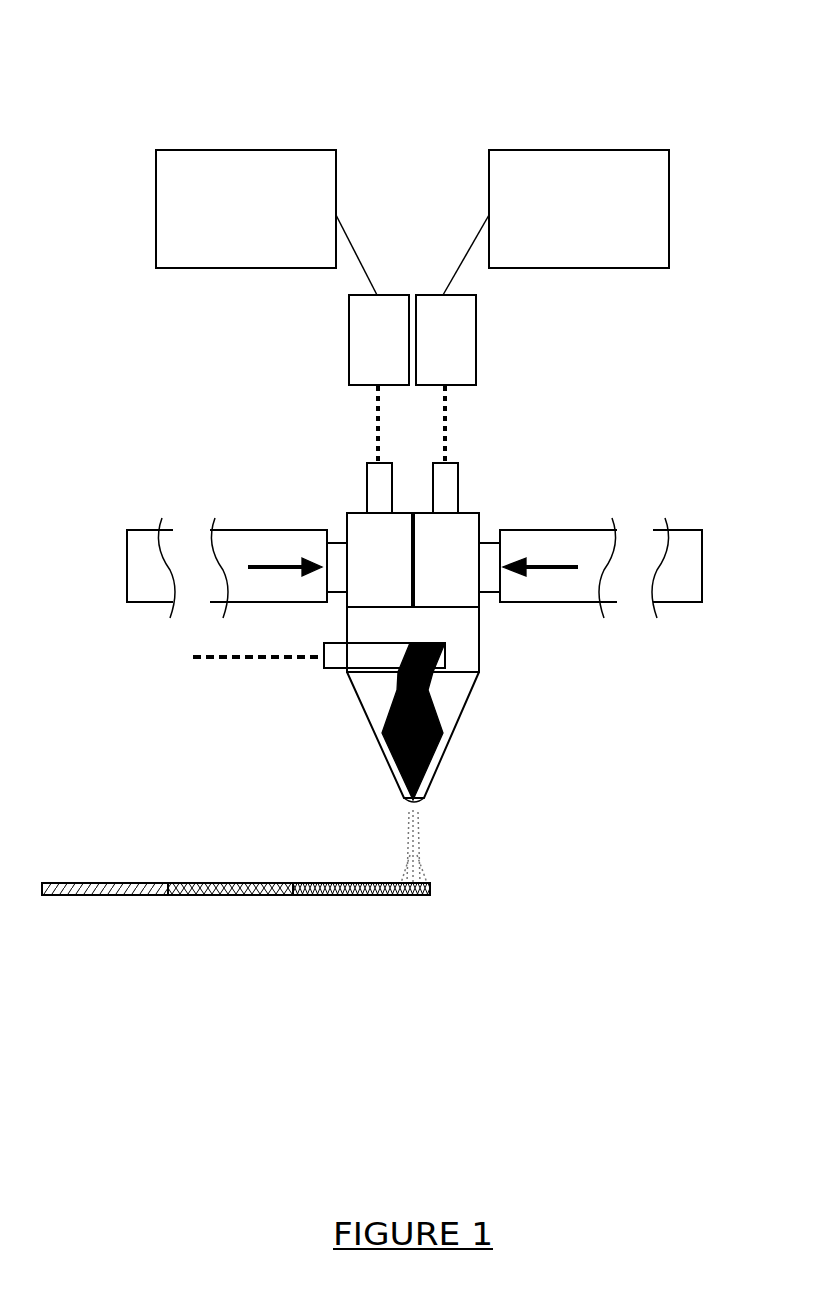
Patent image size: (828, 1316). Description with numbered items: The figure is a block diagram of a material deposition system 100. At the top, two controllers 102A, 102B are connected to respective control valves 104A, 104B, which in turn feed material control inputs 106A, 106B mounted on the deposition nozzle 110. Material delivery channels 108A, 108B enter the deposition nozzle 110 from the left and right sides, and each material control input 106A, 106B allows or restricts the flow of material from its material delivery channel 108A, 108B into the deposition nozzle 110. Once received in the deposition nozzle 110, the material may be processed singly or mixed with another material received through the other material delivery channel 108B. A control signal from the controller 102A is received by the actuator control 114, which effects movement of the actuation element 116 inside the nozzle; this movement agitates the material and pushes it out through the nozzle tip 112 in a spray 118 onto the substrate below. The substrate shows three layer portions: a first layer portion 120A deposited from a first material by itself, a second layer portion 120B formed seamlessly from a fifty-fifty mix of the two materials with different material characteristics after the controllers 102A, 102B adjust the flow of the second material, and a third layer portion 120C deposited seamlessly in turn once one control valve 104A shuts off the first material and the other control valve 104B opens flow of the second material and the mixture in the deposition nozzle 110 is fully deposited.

The material deposition system 100 is at (163, 70).
The controller 102A is at (246, 209).
The controller 102B is at (579, 209).
The control valve 104A is at (378, 340).
The control valve 104B is at (445, 340).
The material control input 106A is at (367, 467).
The material control input 106B is at (450, 487).
The material delivery channel 108A is at (243, 540).
The material delivery channel 108B is at (548, 545).
The deposition nozzle 110 is at (468, 638).
The nozzle tip 112 is at (450, 705).
The actuator control 114 is at (350, 657).
The actuation element 116 is at (393, 763).
The spray 118 is at (417, 833).
The first layer portion 120A is at (80, 895).
The second layer portion 120B is at (207, 895).
The third layer portion 120C is at (345, 895).